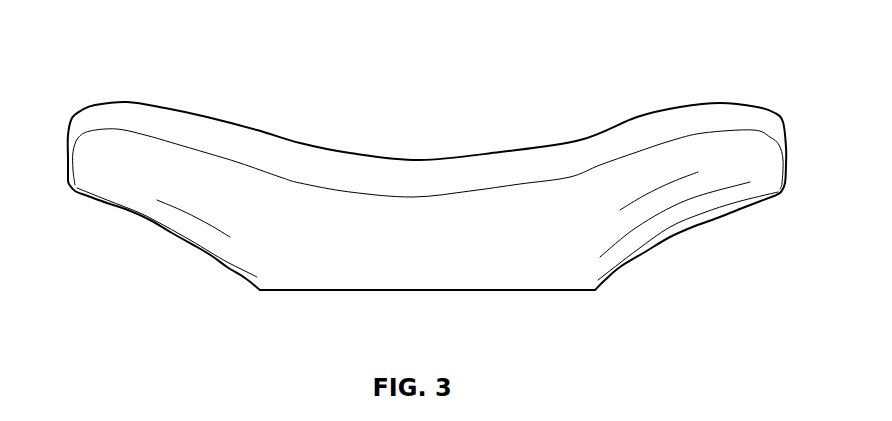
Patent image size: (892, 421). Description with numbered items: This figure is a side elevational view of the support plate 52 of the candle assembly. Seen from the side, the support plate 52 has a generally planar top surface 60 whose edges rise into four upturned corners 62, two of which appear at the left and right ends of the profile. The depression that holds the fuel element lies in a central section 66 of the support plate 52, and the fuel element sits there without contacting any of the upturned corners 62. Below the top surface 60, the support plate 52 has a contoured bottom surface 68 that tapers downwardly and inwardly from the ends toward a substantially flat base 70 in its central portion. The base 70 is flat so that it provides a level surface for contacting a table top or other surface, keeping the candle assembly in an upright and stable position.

The support plate 52 is at (134, 48).
The top surface 60 is at (573, 140).
The upturned corners 62 is at (92, 110).
The central section 66 is at (427, 160).
The contoured bottom surface 68 is at (664, 226).
The base 70 is at (428, 291).